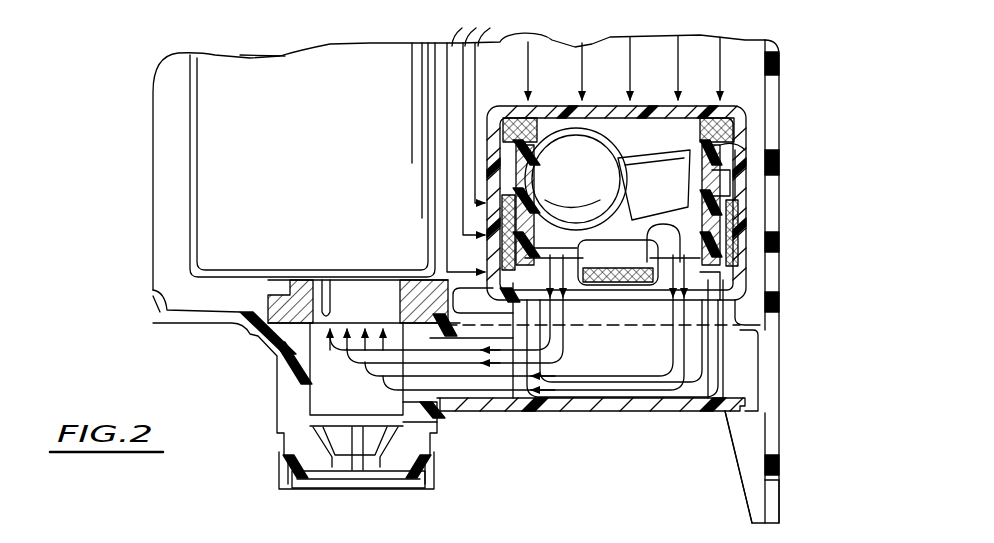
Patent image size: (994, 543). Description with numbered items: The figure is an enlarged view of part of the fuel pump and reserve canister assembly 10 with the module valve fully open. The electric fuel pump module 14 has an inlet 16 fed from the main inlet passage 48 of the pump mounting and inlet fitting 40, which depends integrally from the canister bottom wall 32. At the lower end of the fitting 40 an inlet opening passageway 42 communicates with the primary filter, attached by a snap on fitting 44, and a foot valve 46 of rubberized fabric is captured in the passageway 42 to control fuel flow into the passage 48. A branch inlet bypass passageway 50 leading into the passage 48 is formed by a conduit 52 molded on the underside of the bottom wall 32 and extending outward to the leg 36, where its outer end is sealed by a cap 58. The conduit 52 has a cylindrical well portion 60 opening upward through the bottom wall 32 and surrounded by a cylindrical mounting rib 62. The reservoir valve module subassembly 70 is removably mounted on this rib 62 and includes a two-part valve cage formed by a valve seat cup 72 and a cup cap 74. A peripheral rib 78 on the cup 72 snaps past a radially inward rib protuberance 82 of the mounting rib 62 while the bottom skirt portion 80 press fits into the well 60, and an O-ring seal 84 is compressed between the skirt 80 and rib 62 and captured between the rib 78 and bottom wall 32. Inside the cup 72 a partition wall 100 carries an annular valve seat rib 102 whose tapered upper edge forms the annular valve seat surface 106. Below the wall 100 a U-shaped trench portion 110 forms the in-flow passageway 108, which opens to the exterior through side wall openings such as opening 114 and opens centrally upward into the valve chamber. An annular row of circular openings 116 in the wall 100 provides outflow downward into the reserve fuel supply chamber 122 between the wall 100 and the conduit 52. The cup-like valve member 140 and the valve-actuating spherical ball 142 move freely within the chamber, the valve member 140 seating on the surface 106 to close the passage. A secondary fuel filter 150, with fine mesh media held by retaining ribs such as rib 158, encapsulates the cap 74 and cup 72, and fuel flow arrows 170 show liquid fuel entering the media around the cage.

The fuel pump and reserve canister assembly 10 is at (112, 114).
The electric fuel pump module 14 is at (186, 155).
The inlet 16 is at (330, 316).
The bottom wall 32 is at (164, 300).
The leg 36 is at (776, 470).
The pump mounting and inlet fitting 40 is at (277, 372).
The inlet opening passageway 42 is at (262, 28).
The snap on fitting 44 is at (284, 472).
The foot valve 46 is at (348, 490).
The main inlet passage 48 is at (308, 391).
The branch inlet bypass passageway 50 is at (498, 400).
The conduit 52 is at (608, 404).
The cap 58 is at (766, 345).
The cylindrical well portion 60 is at (722, 395).
The cylindrical mounting rib 62 is at (735, 296).
The reservoir valve module subassembly 70 is at (736, 96).
The valve seat cup 72 is at (776, 168).
The cup cap 74 is at (648, 110).
The peripheral rib 78 is at (507, 298).
The bottom skirt portion 80 is at (735, 300).
The radially inward rib protuberance 82 is at (745, 255).
The O-ring seal 84 is at (766, 303).
The partition wall 100 is at (725, 200).
The annular valve seat rib 102 is at (598, 232).
The annular valve seat surface 106 is at (654, 185).
The in-flow passageway 108 is at (662, 290).
The trench portion 110 is at (600, 290).
The opening 114 is at (614, 284).
The circular openings 116 is at (520, 276).
The reserve fuel supply chamber 122 is at (570, 371).
The cup-like valve member 140 is at (740, 120).
The valve-actuating spherical ball 142 is at (580, 122).
The secondary fuel filter 150 is at (503, 100).
The filter retaining rib 158 is at (638, 290).
The fuel flow arrows 170 is at (485, 24).